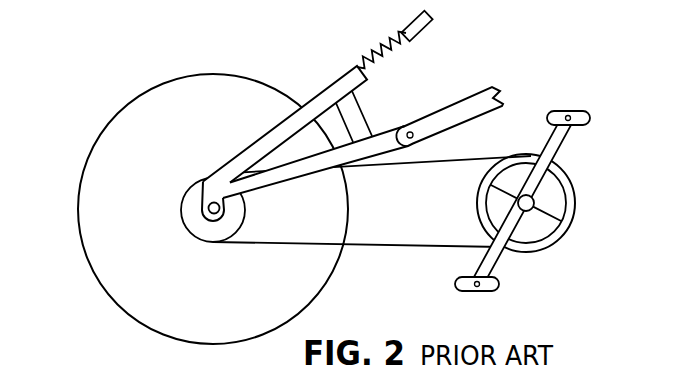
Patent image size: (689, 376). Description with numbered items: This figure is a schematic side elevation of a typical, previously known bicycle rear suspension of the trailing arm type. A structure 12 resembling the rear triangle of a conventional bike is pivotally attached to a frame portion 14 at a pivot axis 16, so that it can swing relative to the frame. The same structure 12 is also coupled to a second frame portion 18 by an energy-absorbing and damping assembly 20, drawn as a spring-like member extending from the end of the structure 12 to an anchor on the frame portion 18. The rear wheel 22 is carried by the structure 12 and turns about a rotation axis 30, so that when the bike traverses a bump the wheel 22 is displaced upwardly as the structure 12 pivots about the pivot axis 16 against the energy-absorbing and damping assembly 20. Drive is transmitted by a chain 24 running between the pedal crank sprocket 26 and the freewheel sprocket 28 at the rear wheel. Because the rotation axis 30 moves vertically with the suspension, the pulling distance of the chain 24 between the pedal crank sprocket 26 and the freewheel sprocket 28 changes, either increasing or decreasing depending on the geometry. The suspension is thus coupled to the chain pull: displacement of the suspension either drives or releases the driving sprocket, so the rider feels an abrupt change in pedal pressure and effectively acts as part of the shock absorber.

The structure resembling the rear triangle 12 is at (322, 82).
The frame portion 14 is at (456, 105).
The pivot axis 16 is at (411, 131).
The frame portion 18 is at (432, 17).
The energy-absorbing and damping assembly 20 is at (380, 41).
The rear wheel 22 is at (100, 137).
The chain 24 is at (483, 157).
The pedal crank sprocket 26 is at (571, 222).
The freewheel sprocket 28 is at (182, 215).
The rotation axis 30 is at (206, 217).